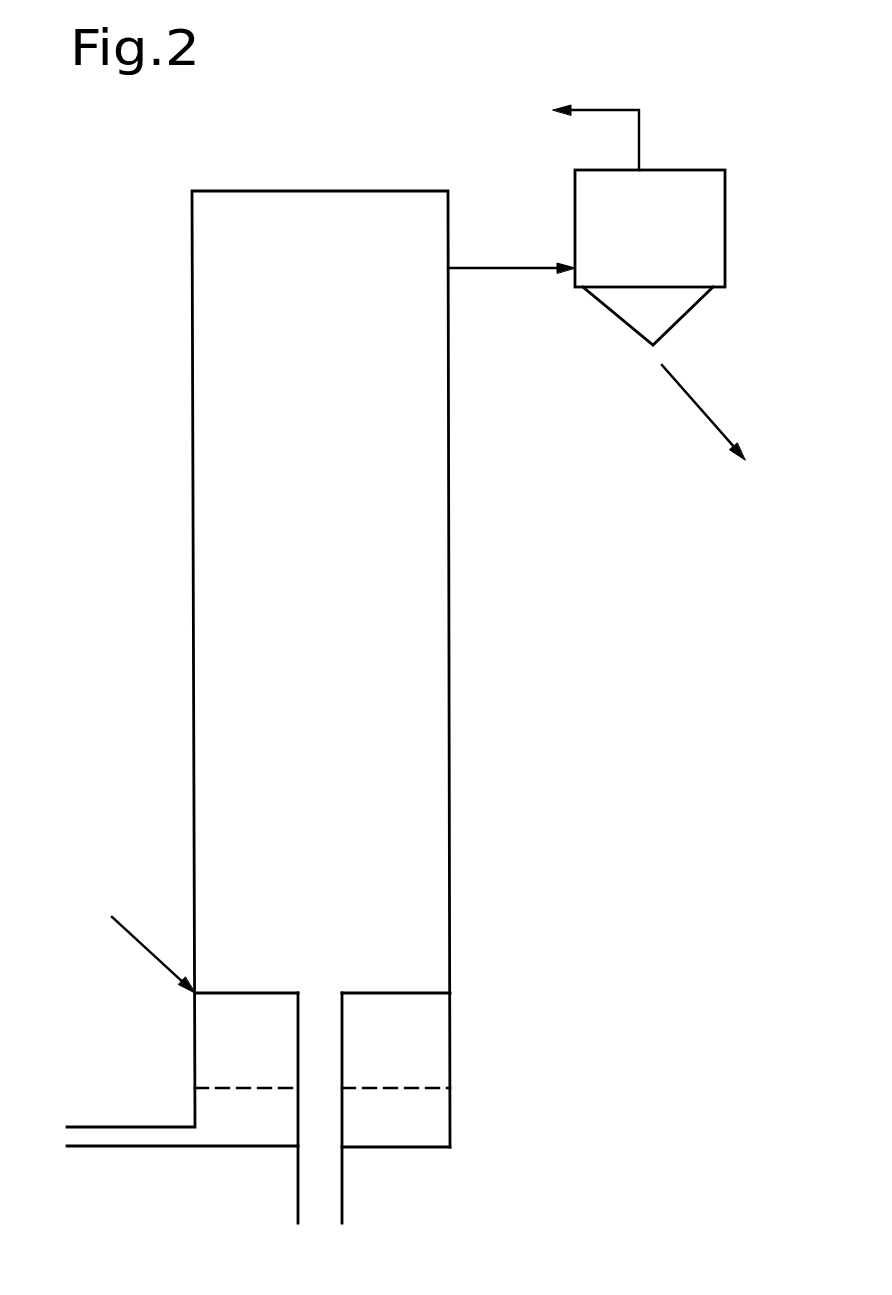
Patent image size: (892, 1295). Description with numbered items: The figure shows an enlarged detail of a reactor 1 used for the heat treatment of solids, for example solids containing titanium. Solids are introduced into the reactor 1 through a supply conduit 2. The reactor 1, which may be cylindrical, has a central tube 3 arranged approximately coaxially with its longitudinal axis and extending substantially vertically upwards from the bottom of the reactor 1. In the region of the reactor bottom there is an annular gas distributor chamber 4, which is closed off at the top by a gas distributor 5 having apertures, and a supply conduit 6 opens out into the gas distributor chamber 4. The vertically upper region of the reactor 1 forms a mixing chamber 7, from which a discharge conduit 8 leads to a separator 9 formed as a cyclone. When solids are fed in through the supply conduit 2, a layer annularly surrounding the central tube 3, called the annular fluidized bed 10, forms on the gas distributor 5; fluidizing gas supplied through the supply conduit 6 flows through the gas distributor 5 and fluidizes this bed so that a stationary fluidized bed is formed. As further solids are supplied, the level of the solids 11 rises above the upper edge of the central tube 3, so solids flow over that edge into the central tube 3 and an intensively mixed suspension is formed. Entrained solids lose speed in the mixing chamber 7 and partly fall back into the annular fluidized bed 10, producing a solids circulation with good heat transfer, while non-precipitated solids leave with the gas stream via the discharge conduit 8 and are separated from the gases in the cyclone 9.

The reactor 1 is at (193, 633).
The supply conduit 2 is at (128, 934).
The central tube 3 is at (330, 1187).
The annular gas distributor chamber 4 is at (212, 1105).
The gas distributor 5 is at (408, 1088).
The supply conduit 6 is at (123, 1147).
The mixing chamber 7 is at (223, 427).
The discharge conduit 8 is at (513, 267).
The separator 9 is at (712, 228).
The annular fluidized bed 10 is at (432, 1052).
The level of the solids 11 is at (413, 993).